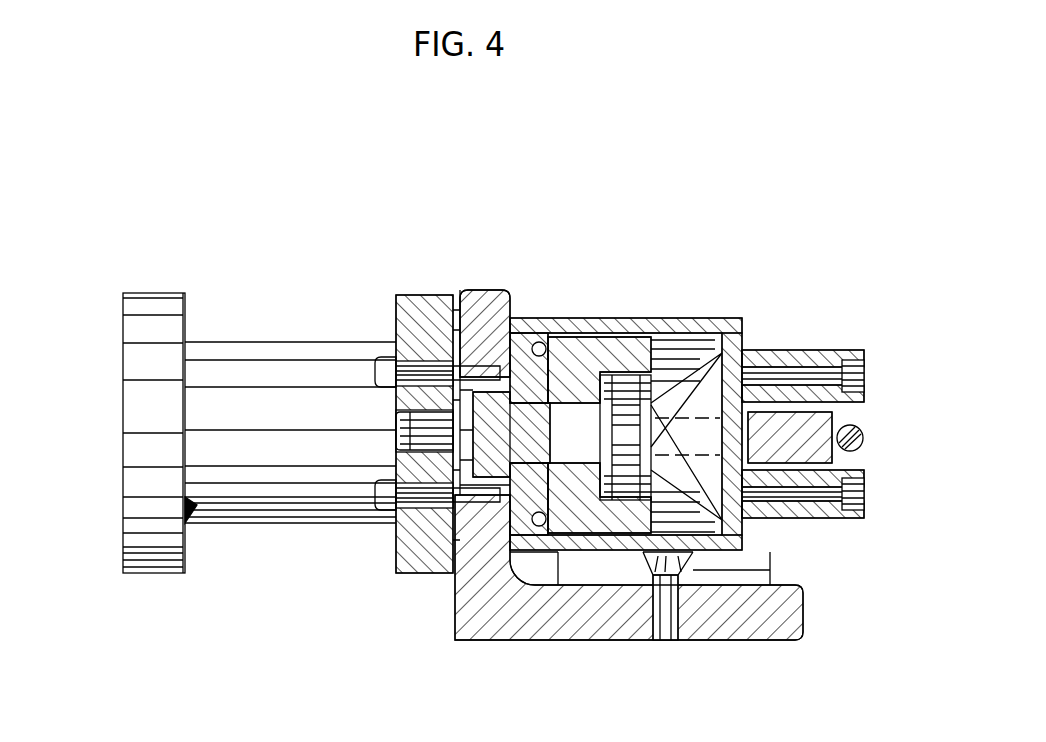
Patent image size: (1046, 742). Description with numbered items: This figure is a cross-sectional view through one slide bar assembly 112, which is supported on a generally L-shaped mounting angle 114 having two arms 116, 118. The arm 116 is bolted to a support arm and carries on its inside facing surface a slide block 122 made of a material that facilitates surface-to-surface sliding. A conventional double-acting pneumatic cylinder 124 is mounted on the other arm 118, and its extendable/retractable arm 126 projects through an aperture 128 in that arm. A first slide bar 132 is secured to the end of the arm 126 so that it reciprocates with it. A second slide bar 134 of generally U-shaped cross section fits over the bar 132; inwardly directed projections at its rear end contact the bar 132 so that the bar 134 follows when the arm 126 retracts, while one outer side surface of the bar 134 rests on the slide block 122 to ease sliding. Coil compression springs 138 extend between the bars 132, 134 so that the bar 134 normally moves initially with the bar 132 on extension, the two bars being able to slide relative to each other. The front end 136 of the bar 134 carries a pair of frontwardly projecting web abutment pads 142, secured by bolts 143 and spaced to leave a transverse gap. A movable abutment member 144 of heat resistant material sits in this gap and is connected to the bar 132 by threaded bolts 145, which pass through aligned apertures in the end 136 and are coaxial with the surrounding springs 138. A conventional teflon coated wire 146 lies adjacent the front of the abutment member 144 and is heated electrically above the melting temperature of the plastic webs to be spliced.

The slide bar assembly 112 is at (424, 248).
The mounting angle 114 is at (447, 637).
The arm 116 is at (758, 627).
The arm 118 is at (487, 305).
The slide block 122 is at (770, 556).
The double-acting pneumatic cylinder 124 is at (133, 523).
The extendable/retractable arm 126 is at (523, 432).
The aperture 128 is at (425, 380).
The first slide bar 132 is at (581, 353).
The second slide bar 134 is at (718, 318).
The front end 136 is at (735, 530).
The coil compression spring 138 is at (690, 385).
The web abutment pad 142 is at (820, 350).
The bolt 143 is at (876, 352).
The movable abutment member 144 is at (830, 430).
The threaded bolt 145 is at (705, 572).
The wire 146 is at (866, 438).